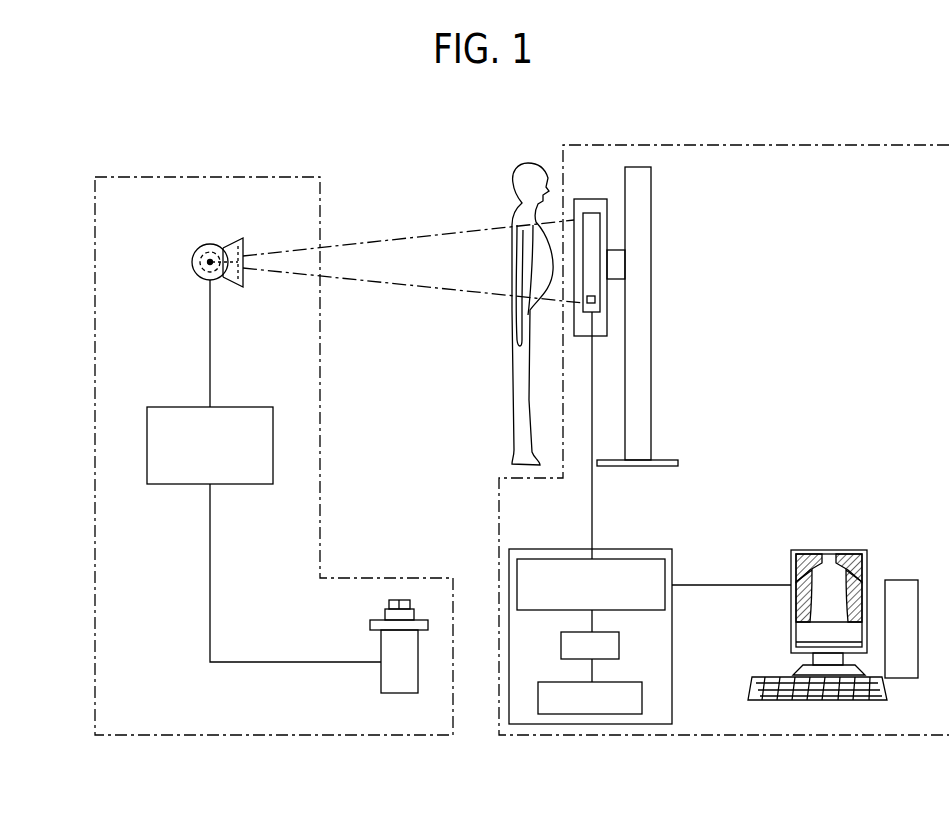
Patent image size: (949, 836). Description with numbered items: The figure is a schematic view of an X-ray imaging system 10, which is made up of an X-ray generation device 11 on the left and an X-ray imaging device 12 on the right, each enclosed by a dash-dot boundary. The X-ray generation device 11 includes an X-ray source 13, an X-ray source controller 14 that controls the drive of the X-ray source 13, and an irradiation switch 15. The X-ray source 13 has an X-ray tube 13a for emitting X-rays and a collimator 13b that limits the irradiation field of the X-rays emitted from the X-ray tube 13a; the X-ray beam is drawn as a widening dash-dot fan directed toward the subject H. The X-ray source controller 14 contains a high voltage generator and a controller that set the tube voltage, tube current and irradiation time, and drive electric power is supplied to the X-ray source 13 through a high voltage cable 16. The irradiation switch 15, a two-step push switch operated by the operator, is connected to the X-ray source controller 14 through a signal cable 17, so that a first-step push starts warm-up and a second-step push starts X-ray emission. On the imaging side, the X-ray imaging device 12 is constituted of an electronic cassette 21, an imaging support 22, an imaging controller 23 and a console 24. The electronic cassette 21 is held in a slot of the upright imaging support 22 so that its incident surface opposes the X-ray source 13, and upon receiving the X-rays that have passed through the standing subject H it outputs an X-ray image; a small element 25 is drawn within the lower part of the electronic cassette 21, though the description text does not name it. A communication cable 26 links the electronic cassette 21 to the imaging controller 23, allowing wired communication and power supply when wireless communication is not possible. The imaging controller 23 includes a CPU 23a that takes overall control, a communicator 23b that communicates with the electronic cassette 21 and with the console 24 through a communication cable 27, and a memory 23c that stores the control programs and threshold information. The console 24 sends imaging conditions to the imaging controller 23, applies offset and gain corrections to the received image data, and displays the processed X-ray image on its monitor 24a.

The X-ray imaging system 10 is at (412, 128).
The X-ray generation device 11 is at (179, 177).
The X-ray imaging device 12 is at (686, 145).
The X-ray source 13 is at (206, 237).
The X-ray tube 13a is at (192, 262).
The collimator 13b is at (246, 240).
The X-ray source controller 14 is at (180, 407).
The irradiation switch 15 is at (381, 681).
The high voltage cable 16 is at (210, 338).
The signal cable 17 is at (210, 536).
The electronic cassette 21 is at (628, 249).
The imaging support 22 is at (651, 227).
The imaging controller 23 is at (613, 606).
The CPU 23a is at (619, 645).
The communicator 23b is at (572, 559).
The memory 23c is at (642, 695).
The console 24 is at (833, 593).
The monitor 24a is at (857, 535).
The X-ray detection sensor 25 is at (596, 300).
The communication cable 26 is at (592, 496).
The communication cable 27 is at (724, 586).
The subject H is at (518, 375).